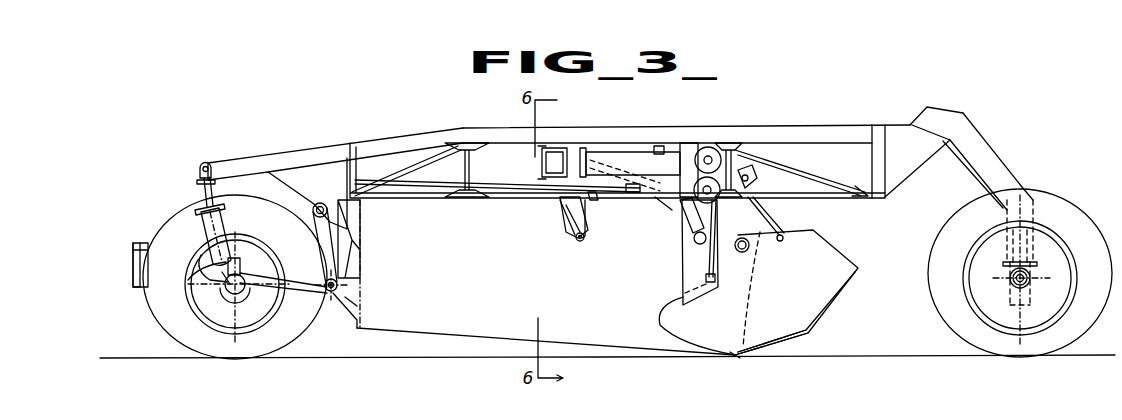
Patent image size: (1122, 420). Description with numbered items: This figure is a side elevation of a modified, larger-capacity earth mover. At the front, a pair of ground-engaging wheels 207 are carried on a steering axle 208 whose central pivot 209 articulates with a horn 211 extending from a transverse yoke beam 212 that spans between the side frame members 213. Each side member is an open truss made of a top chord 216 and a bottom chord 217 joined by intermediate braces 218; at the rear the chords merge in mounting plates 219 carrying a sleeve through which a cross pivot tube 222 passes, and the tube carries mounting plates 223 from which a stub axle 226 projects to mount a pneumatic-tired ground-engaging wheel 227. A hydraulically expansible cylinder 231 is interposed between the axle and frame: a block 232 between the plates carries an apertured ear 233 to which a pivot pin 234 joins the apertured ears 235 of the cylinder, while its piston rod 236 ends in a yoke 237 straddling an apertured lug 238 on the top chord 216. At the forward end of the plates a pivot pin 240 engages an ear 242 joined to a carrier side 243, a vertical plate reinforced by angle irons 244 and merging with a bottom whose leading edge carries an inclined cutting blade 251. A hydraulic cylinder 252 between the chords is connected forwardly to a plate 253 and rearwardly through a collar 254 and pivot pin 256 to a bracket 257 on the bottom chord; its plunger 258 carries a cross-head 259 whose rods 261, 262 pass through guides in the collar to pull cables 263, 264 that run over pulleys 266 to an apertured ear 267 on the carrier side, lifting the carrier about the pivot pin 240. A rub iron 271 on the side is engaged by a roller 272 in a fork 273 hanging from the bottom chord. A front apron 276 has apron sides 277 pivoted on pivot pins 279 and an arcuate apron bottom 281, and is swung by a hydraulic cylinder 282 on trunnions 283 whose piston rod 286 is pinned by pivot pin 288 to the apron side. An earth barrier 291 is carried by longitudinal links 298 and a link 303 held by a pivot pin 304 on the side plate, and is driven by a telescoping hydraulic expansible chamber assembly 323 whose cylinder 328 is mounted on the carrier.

The front ground-engaging wheel 207 is at (991, 353).
The steering axle 208 is at (1010, 283).
The pivot 209 is at (1028, 246).
The horn 211 is at (1009, 174).
The transverse yoke beam 212 is at (934, 147).
The side frame member 213 is at (877, 125).
The top chord 216 is at (390, 147).
The bottom chord 217 is at (383, 198).
The intermediate braces 218 is at (452, 170).
The mounting plates 219 is at (291, 166).
The cross pivot tube 222 is at (322, 203).
The mounting plate 223 is at (297, 281).
The stub axle 226 is at (242, 281).
The ground-engaging wheel 227 is at (153, 302).
The hydraulically expansible cylinder 231 is at (224, 224).
The block 232 is at (241, 262).
The apertured ear 233 is at (222, 280).
The pivot pin 234 is at (189, 277).
The apertured ears 235 is at (196, 253).
The piston rod 236 is at (204, 192).
The yoke 237 is at (203, 180).
The apertured lug 238 is at (205, 164).
The pivot pin 240 is at (328, 280).
The ear 242 is at (333, 300).
The carrier side 243 is at (397, 318).
The angle irons 244 is at (437, 190).
The cutting blade 251 is at (741, 362).
The hydraulic cylinder 252 is at (643, 158).
The plate 253 is at (690, 143).
The collar 254 is at (557, 195).
The pivot pin 256 is at (592, 197).
The bracket 257 is at (567, 208).
The plunger 258 is at (550, 162).
The cross-head 259 is at (541, 166).
The rod 261 is at (593, 150).
The rod 262 is at (632, 194).
The pull cable 263 is at (664, 152).
The pull cable 264 is at (660, 208).
The pulley 266 is at (712, 152).
The apertured ear 267 is at (708, 285).
The rub iron 271 is at (686, 256).
The roller 272 is at (694, 240).
The fork 273 is at (682, 205).
The front apron 276 is at (856, 285).
The apron side 277 is at (834, 257).
The pivot pin 279 is at (742, 252).
The apron bottom 281 is at (827, 311).
The hydraulic cylinder 282 is at (742, 152).
The trunnions 283 is at (757, 177).
The piston rod 286 is at (767, 214).
The pivot pin 288 is at (783, 240).
The earth barrier 291 is at (590, 212).
The longitudinal link 298 is at (615, 153).
The link 303 is at (571, 233).
The pivot pin 304 is at (579, 242).
The hydraulic expansible chamber assembly 323 is at (127, 256).
The cylinder 328 is at (140, 243).